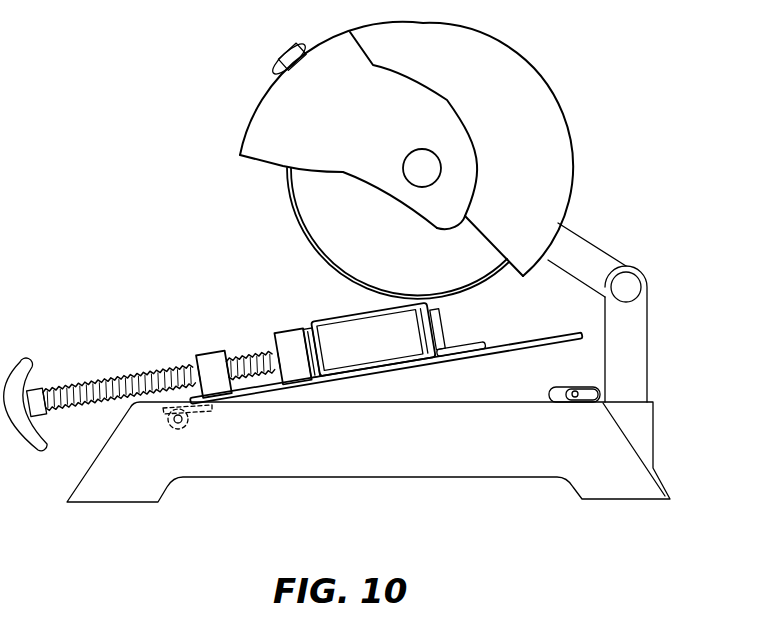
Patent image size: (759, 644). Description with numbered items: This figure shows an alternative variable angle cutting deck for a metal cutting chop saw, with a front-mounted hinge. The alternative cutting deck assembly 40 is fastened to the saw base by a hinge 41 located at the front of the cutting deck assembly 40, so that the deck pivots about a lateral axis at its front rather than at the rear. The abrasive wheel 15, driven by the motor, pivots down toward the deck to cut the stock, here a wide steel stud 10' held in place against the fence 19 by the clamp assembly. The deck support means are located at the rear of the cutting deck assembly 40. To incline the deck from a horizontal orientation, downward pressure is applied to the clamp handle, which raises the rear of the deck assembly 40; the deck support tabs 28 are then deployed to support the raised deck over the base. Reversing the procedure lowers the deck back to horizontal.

The abrasive wheel 15 is at (310, 192).
The wide steel stud 10' is at (287, 315).
The fence 19 is at (455, 352).
The alternative cutting deck assembly 40 is at (533, 335).
The deck support tabs 28 is at (592, 403).
The hinge 41 is at (168, 427).